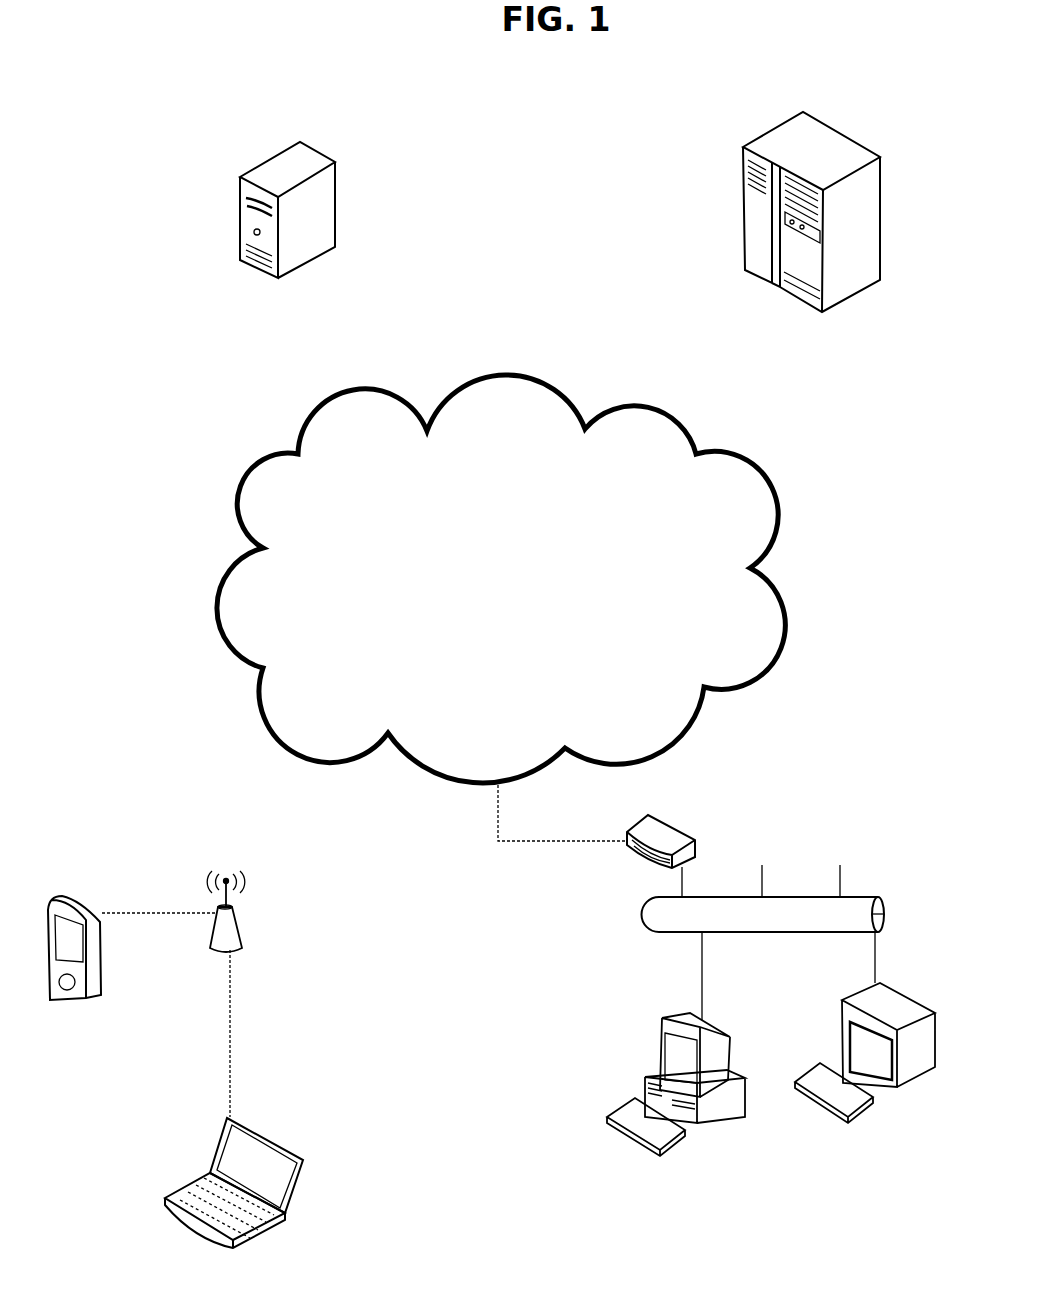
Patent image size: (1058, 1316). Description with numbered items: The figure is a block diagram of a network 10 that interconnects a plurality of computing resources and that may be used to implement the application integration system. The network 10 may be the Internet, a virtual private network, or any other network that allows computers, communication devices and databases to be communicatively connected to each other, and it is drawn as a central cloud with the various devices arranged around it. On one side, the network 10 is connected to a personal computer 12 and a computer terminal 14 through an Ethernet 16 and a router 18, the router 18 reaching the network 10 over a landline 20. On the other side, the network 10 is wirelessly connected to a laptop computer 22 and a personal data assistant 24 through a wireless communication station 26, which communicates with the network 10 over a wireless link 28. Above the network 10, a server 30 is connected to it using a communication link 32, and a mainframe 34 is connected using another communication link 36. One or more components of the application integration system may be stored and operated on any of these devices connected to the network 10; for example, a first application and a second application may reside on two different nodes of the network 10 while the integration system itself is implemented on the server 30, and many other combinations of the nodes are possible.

The network 10 is at (501, 579).
The personal computer 12 is at (660, 1020).
The computer terminal 14 is at (908, 1005).
The Ethernet 16 is at (763, 942).
The router 18 is at (695, 840).
The landline 20 is at (550, 840).
The laptop computer 22 is at (283, 1220).
The personal data assistant 24 is at (80, 902).
The wireless communication station 26 is at (238, 935).
The wireless link 28 is at (327, 762).
The server 30 is at (335, 205).
The communication link 32 is at (313, 262).
The mainframe 34 is at (880, 280).
The communication link 36 is at (780, 287).